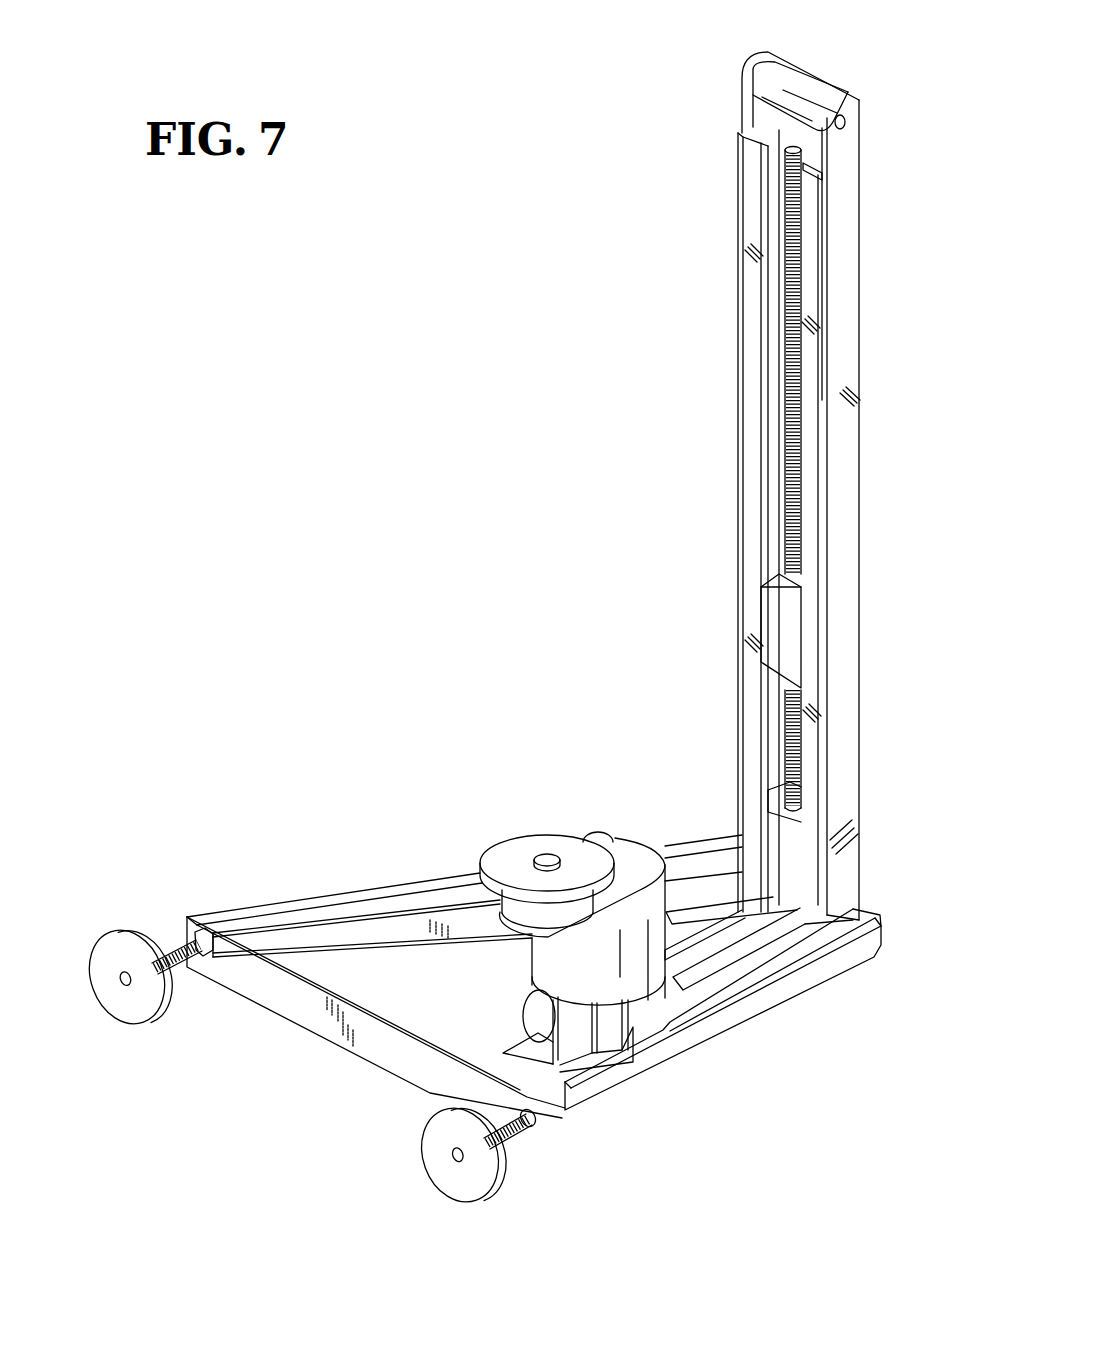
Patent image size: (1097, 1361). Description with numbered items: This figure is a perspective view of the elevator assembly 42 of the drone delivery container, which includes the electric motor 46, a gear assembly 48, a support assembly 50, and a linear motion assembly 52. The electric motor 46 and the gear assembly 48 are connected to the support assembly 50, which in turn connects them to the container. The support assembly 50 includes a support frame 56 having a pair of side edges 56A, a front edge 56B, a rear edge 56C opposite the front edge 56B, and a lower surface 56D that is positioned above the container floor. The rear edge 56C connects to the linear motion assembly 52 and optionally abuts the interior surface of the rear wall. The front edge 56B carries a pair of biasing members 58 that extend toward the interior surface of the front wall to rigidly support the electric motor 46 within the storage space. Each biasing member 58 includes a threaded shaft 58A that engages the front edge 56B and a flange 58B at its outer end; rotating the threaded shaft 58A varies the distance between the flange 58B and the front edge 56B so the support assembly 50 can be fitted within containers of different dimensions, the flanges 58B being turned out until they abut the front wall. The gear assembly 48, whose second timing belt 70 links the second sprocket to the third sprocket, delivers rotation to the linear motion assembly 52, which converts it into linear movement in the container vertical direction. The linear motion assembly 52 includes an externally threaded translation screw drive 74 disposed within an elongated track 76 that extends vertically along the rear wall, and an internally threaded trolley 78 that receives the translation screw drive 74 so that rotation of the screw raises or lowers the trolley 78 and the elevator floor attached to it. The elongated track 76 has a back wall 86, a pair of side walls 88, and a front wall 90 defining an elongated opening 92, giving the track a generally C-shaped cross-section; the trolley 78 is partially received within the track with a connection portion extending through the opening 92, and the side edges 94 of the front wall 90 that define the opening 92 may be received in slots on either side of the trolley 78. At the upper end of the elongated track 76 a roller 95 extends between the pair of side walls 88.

The elevator assembly 42 is at (478, 638).
The electric motor 46 is at (540, 947).
The gear assembly 48 is at (768, 940).
The support assembly 50 is at (308, 860).
The linear motion assembly 52 is at (878, 643).
The support frame 56 is at (400, 882).
The side edges 56A is at (458, 880).
The front edge 56B is at (400, 1048).
The rear edge 56C is at (880, 930).
The lower surface 56D is at (718, 1038).
The biasing members 58 is at (138, 912).
The threaded shaft 58A is at (163, 940).
The flange 58B is at (112, 992).
The second timing belt 70 is at (712, 930).
The translation screw drive 74 is at (790, 378).
The elongated track 76 is at (848, 160).
The trolley 78 is at (778, 630).
The back wall 86 is at (860, 225).
The side walls 88 is at (845, 330).
The front wall 90 is at (810, 530).
The elongated opening 92 is at (775, 200).
The side edges 94 is at (750, 290).
The roller 95 is at (797, 95).